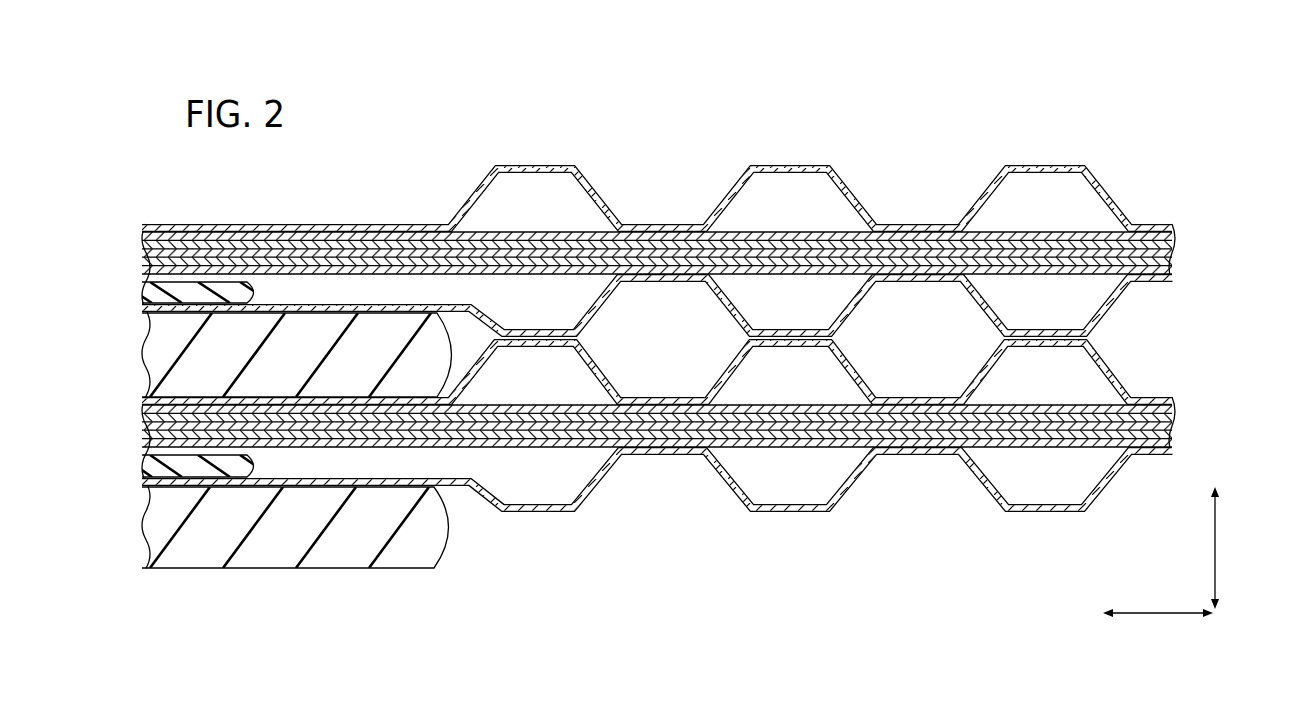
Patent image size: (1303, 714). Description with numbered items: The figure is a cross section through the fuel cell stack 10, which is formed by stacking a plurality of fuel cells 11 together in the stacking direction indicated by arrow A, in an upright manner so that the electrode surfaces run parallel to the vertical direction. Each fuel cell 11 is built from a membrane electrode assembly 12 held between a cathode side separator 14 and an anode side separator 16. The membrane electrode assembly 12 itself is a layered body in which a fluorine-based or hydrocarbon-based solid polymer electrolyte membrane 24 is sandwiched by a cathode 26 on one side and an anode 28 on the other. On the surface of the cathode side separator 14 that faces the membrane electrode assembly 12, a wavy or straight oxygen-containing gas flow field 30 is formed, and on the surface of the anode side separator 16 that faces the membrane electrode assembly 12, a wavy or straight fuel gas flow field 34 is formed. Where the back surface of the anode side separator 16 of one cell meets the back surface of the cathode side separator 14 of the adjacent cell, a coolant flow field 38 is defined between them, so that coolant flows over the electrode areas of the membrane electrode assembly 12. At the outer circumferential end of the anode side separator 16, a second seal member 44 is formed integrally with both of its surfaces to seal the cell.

The fuel cell stack 10 is at (641, 128).
The fuel cell 11 is at (1042, 88).
The membrane electrode assembly 12 is at (857, 130).
The cathode side separator 14 is at (793, 163).
The anode side separator 16 is at (998, 316).
The solid polymer electrolyte membrane 24 is at (912, 262).
The cathode 26 is at (851, 236).
The anode 28 is at (941, 270).
The oxygen-containing gas flow field 30 is at (790, 300).
The fuel gas flow field 34 is at (789, 390).
The coolant flow field 38 is at (790, 337).
The second seal member 44 is at (162, 350).